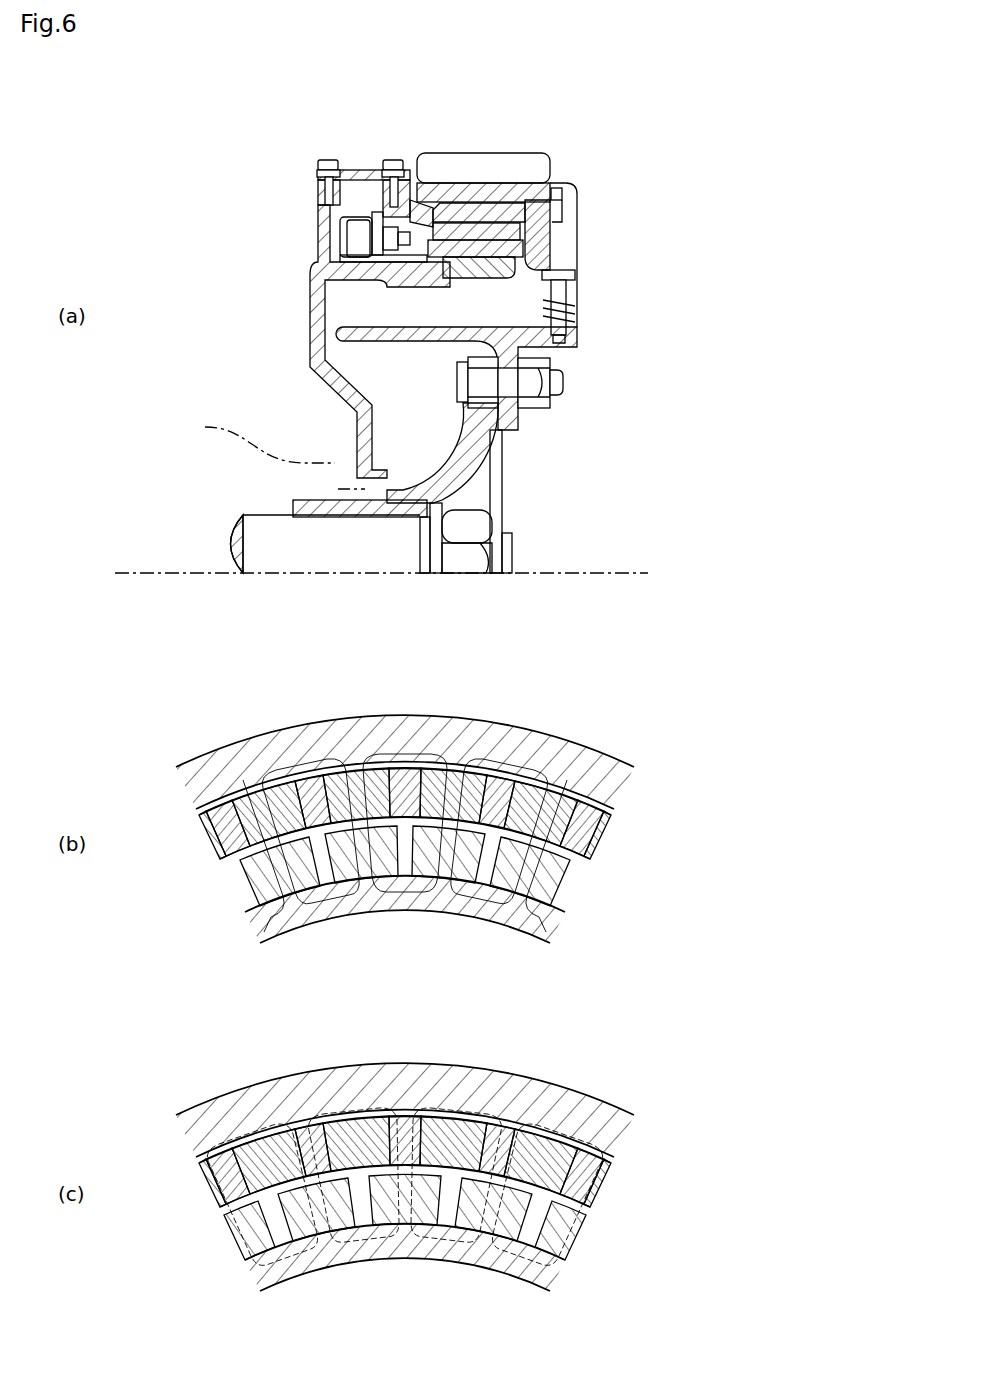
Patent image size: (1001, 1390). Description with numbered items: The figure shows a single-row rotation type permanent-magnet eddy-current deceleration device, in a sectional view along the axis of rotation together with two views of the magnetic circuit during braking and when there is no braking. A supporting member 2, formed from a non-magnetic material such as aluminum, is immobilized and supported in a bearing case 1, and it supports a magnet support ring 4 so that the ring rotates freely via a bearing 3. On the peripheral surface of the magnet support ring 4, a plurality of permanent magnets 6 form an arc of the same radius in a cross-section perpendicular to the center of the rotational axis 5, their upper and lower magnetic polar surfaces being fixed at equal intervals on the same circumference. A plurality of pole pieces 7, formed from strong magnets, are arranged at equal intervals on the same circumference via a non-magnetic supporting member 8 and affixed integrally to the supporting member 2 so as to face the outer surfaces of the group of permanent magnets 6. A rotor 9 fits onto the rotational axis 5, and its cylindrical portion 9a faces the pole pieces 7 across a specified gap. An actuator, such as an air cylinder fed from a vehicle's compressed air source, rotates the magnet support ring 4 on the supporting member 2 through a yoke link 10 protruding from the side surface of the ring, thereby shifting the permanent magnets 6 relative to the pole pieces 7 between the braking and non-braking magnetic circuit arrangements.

The bearing case 1 is at (318, 467).
The supporting member 2 is at (325, 313).
The bearing 3 is at (440, 262).
The magnet support ring 4 is at (492, 253).
The rotational axis 5 is at (322, 565).
The permanent magnet 6 is at (472, 243).
The pole piece 7 is at (500, 212).
The supporting member 8 is at (530, 218).
The rotor 9 is at (557, 228).
The cylindrical portion 9a is at (457, 188).
The yoke link 10 is at (407, 243).